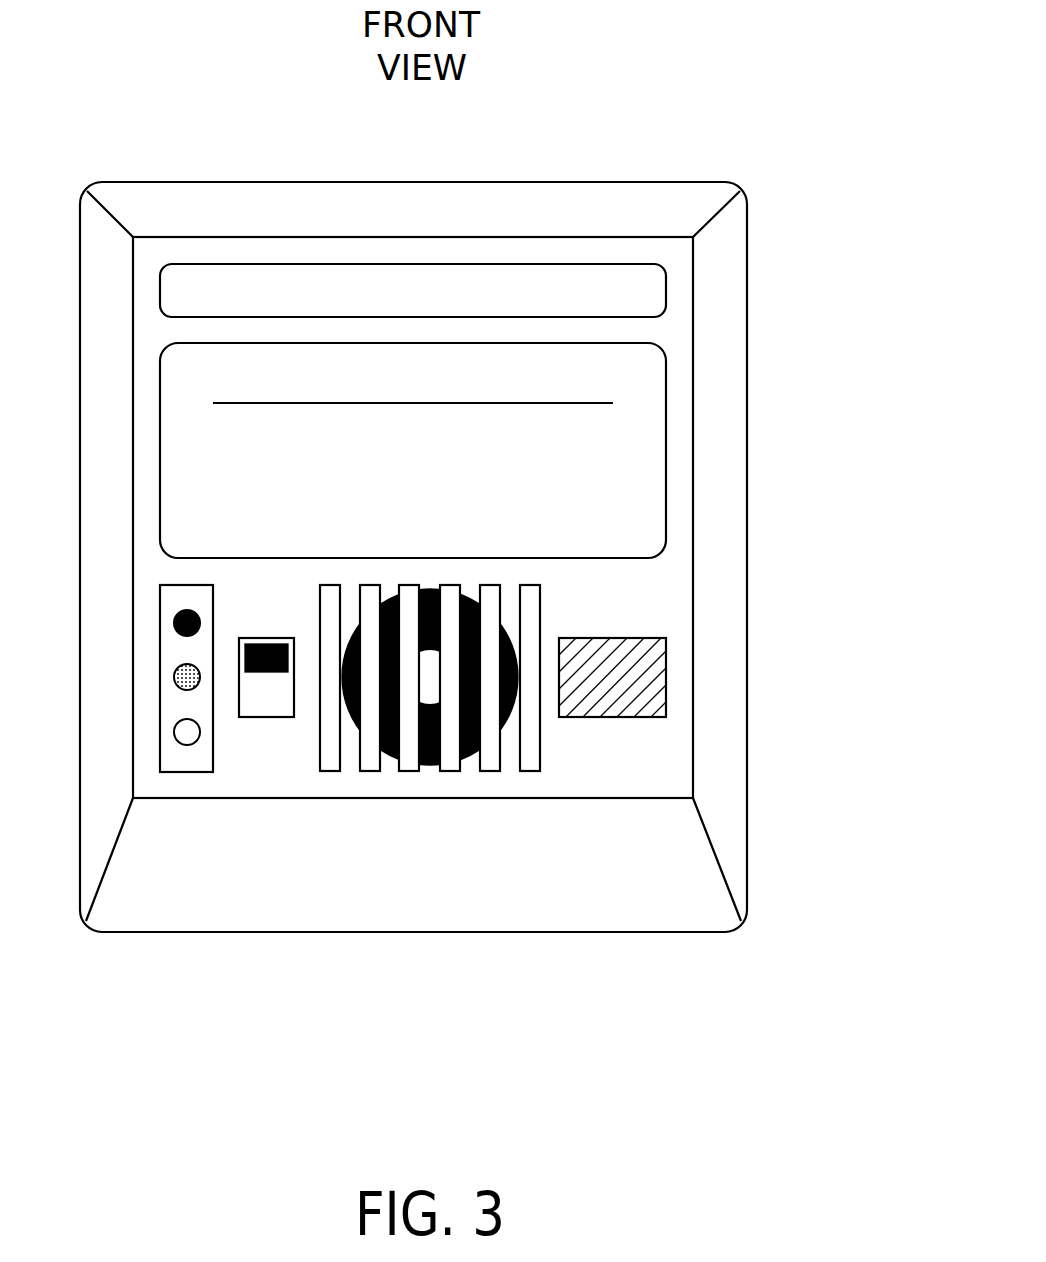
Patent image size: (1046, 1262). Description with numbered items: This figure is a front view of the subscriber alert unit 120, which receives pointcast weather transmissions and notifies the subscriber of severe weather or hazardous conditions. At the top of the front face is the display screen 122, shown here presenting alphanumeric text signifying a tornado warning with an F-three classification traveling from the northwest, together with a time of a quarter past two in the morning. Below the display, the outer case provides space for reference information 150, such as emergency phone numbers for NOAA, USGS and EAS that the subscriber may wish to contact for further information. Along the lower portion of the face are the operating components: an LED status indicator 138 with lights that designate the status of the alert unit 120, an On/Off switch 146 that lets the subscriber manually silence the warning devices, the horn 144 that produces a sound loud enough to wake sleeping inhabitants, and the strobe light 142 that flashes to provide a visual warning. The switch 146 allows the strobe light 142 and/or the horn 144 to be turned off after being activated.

The alert unit 120 is at (127, 72).
The display screen 122 is at (666, 293).
The reference information 150 is at (666, 512).
The LED status indicators 138 is at (187, 772).
The On/Off switch 146 is at (263, 772).
The horn 144 is at (435, 772).
The strobe light 142 is at (666, 698).